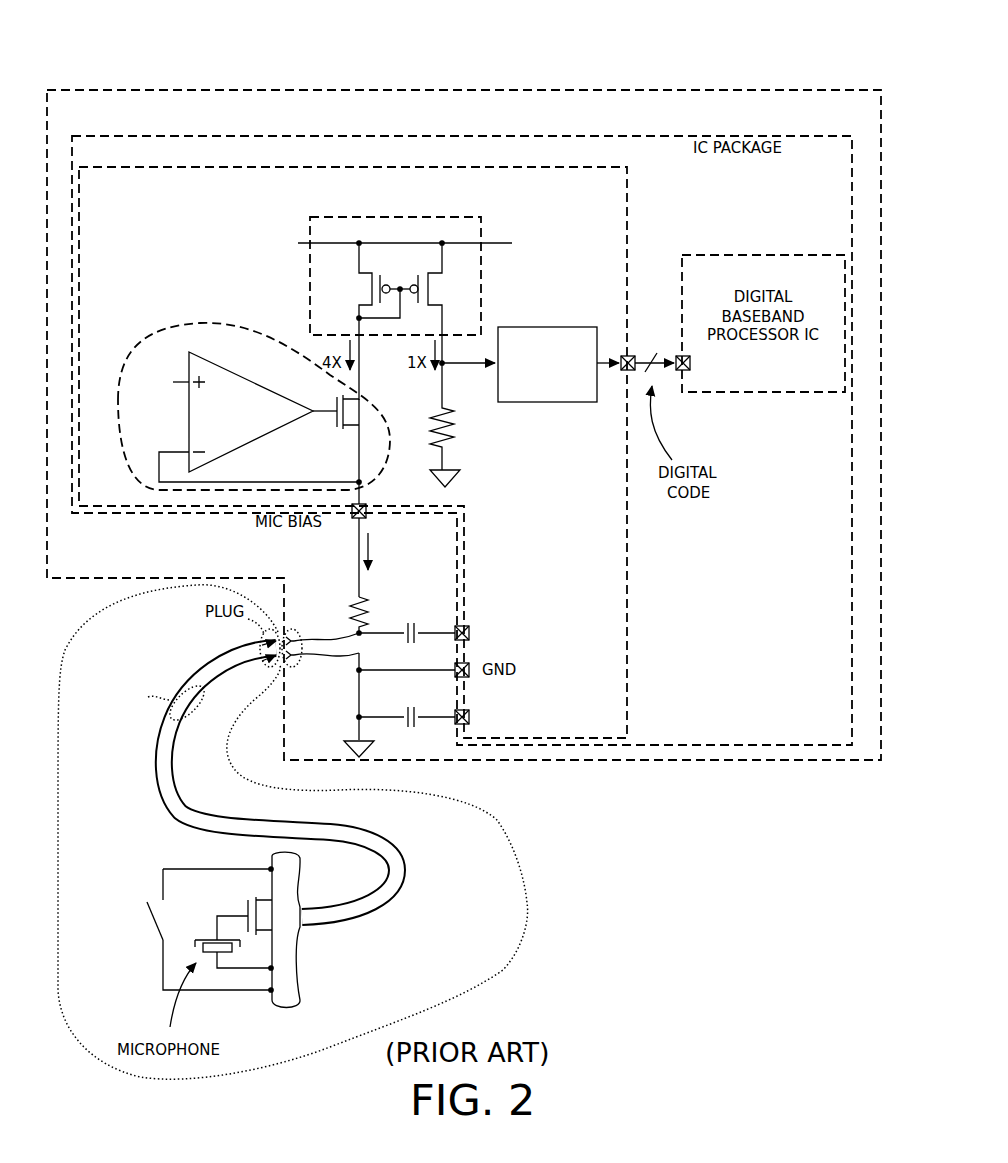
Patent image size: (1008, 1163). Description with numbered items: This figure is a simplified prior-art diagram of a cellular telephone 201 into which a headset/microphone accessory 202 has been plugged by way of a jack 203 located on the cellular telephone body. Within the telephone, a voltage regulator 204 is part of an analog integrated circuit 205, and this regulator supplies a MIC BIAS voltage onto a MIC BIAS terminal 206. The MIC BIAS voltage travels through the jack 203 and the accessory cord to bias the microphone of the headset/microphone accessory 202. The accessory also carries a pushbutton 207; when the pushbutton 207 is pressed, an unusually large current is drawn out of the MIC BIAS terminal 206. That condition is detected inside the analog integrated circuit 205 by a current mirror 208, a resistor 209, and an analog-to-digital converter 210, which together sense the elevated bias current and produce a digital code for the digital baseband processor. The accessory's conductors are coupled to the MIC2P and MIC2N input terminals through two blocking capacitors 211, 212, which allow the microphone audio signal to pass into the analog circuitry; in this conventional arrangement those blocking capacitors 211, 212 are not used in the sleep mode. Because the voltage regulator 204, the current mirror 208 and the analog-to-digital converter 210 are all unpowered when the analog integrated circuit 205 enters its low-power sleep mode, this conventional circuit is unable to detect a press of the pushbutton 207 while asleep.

The cellular telephone 201 is at (795, 64).
The headset/microphone accessory 202 is at (527, 887).
The jack 203 is at (297, 631).
The voltage regulator 204 is at (205, 326).
The analog integrated circuit 205 is at (628, 171).
The MIC BIAS terminal 206 is at (369, 506).
The pushbutton 207 is at (170, 929).
The current mirror 208 is at (310, 265).
The resistor 209 is at (462, 432).
The analog-to-digital converter (ADC) 210 is at (547, 325).
The blocking capacitor 211 is at (411, 622).
The blocking capacitor 212 is at (411, 706).